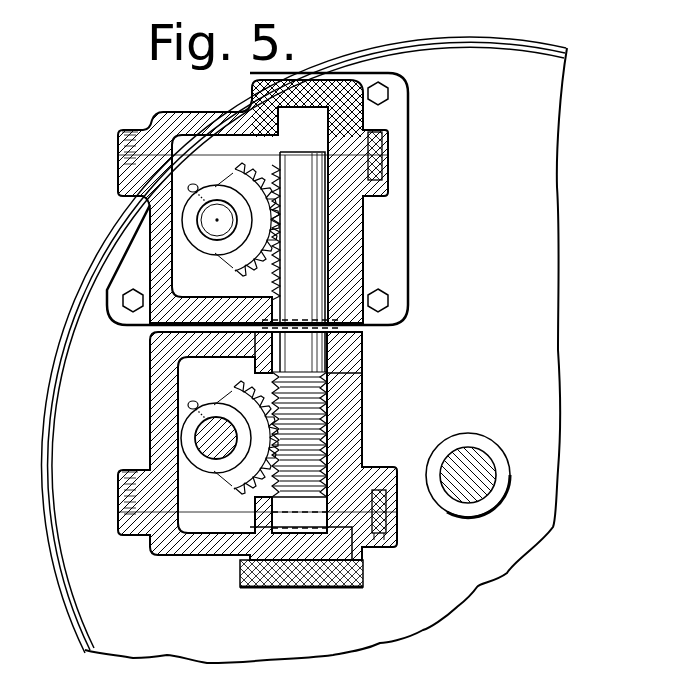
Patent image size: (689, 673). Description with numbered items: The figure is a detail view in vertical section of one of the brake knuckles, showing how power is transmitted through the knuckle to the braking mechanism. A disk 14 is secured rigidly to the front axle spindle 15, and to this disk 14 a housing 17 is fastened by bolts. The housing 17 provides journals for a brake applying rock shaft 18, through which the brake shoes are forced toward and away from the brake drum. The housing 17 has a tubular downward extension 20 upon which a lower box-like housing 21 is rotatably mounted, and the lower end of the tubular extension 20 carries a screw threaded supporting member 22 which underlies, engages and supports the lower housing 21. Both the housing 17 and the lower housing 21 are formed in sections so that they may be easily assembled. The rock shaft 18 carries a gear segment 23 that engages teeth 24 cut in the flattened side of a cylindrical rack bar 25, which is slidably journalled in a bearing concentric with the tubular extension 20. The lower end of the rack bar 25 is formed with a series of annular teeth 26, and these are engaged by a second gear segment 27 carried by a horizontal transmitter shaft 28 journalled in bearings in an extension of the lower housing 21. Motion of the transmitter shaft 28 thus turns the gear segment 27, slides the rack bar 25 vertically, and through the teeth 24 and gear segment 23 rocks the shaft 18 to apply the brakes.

The disk 14 is at (333, 626).
The front axle spindle 15 is at (480, 478).
The housing 17 is at (348, 248).
The brake applying rock shaft 18 is at (214, 230).
The tubular downward extension 20 is at (337, 353).
The lower box-like housing 21 is at (357, 397).
The screw threaded supporting member 22 is at (348, 573).
The gear segment 23 is at (252, 258).
The teeth 24 is at (274, 280).
The cylindrical rack bar 25 is at (313, 207).
The annular teeth 26 is at (273, 398).
The gear segment 27 is at (250, 482).
The horizontal transmitter shaft 28 is at (215, 448).